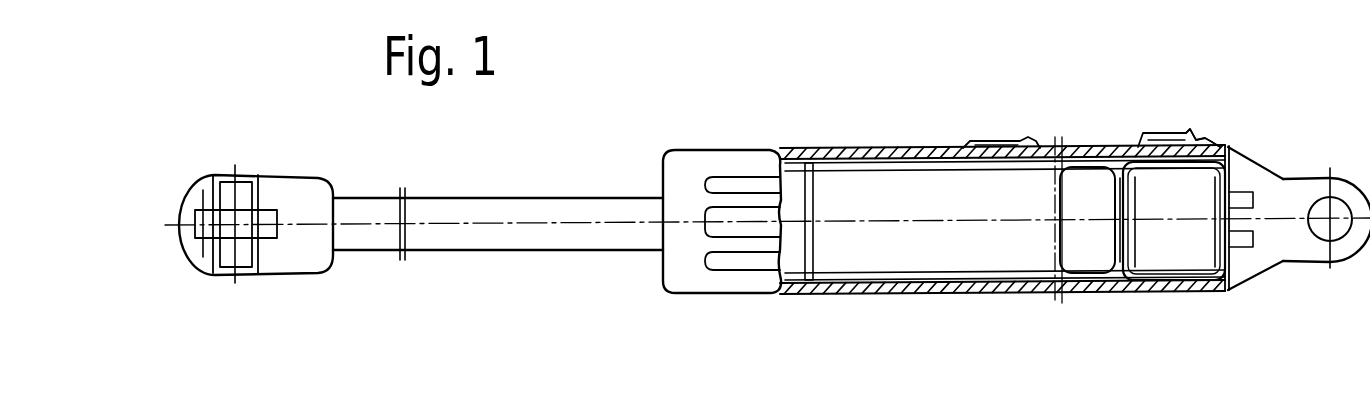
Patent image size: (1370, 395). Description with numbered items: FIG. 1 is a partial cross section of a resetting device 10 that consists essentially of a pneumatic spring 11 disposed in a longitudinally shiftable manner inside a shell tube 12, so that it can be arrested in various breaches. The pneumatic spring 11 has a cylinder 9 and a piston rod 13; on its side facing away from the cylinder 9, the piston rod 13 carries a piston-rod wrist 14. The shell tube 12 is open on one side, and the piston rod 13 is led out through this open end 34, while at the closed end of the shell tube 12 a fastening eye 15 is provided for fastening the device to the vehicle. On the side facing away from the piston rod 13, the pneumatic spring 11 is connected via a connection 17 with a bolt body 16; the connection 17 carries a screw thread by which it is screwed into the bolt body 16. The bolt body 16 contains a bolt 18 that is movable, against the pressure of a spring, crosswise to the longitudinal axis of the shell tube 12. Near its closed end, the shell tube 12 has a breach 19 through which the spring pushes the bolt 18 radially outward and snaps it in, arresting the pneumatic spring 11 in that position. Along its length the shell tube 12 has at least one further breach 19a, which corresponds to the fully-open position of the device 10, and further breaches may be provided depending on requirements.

The cylinder 9 is at (1031, 248).
The device 10 is at (1079, 120).
The pneumatic spring 11 is at (832, 185).
The shell tube 12 is at (858, 283).
The piston rod 13 is at (480, 237).
The piston-rod wrist 14 is at (290, 248).
The fastening eye 15 is at (1302, 243).
The bolt body 16 is at (1183, 253).
The connection 17 is at (1127, 243).
The bolt 18 is at (1182, 133).
The breach 19 is at (1135, 143).
The breach 19a is at (970, 143).
The open end 34 is at (663, 166).